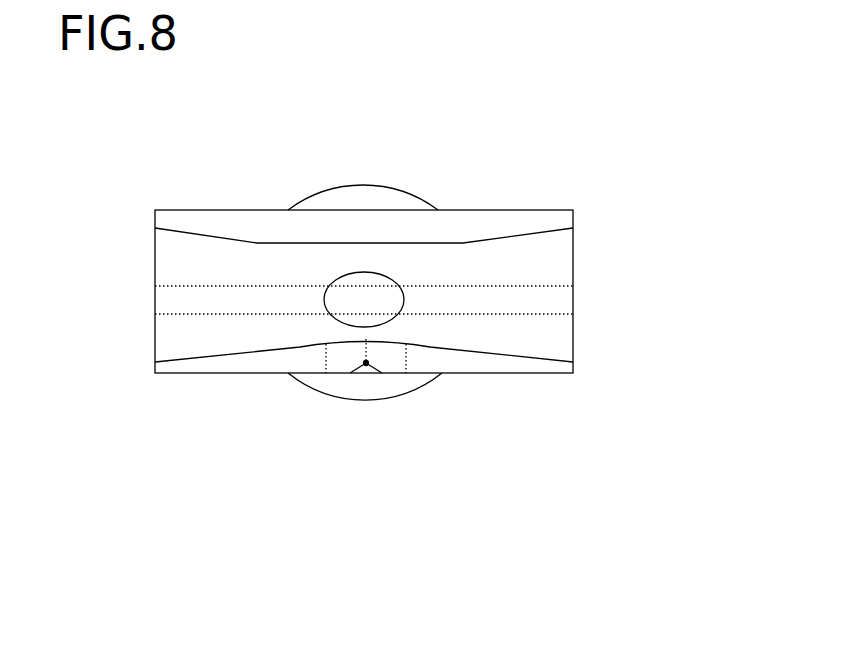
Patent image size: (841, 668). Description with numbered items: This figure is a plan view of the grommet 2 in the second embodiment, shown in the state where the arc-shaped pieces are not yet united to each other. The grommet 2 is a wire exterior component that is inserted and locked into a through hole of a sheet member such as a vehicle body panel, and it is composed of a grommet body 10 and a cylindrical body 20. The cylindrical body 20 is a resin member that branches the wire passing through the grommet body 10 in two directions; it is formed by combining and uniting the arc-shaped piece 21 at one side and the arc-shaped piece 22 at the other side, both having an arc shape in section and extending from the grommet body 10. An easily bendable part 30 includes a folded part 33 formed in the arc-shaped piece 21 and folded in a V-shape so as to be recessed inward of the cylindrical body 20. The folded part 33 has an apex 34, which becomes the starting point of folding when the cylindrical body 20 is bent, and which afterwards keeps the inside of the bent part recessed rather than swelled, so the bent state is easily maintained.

The grommet 2 is at (540, 133).
The grommet body 10 is at (381, 188).
The cylindrical body 20 is at (243, 211).
The arc-shaped piece at one side 21 is at (548, 373).
The arc-shaped piece at the other side 22 is at (368, 211).
The easily bendable part 30 is at (390, 389).
The folded part 33 is at (340, 360).
The apex 34 is at (366, 363).